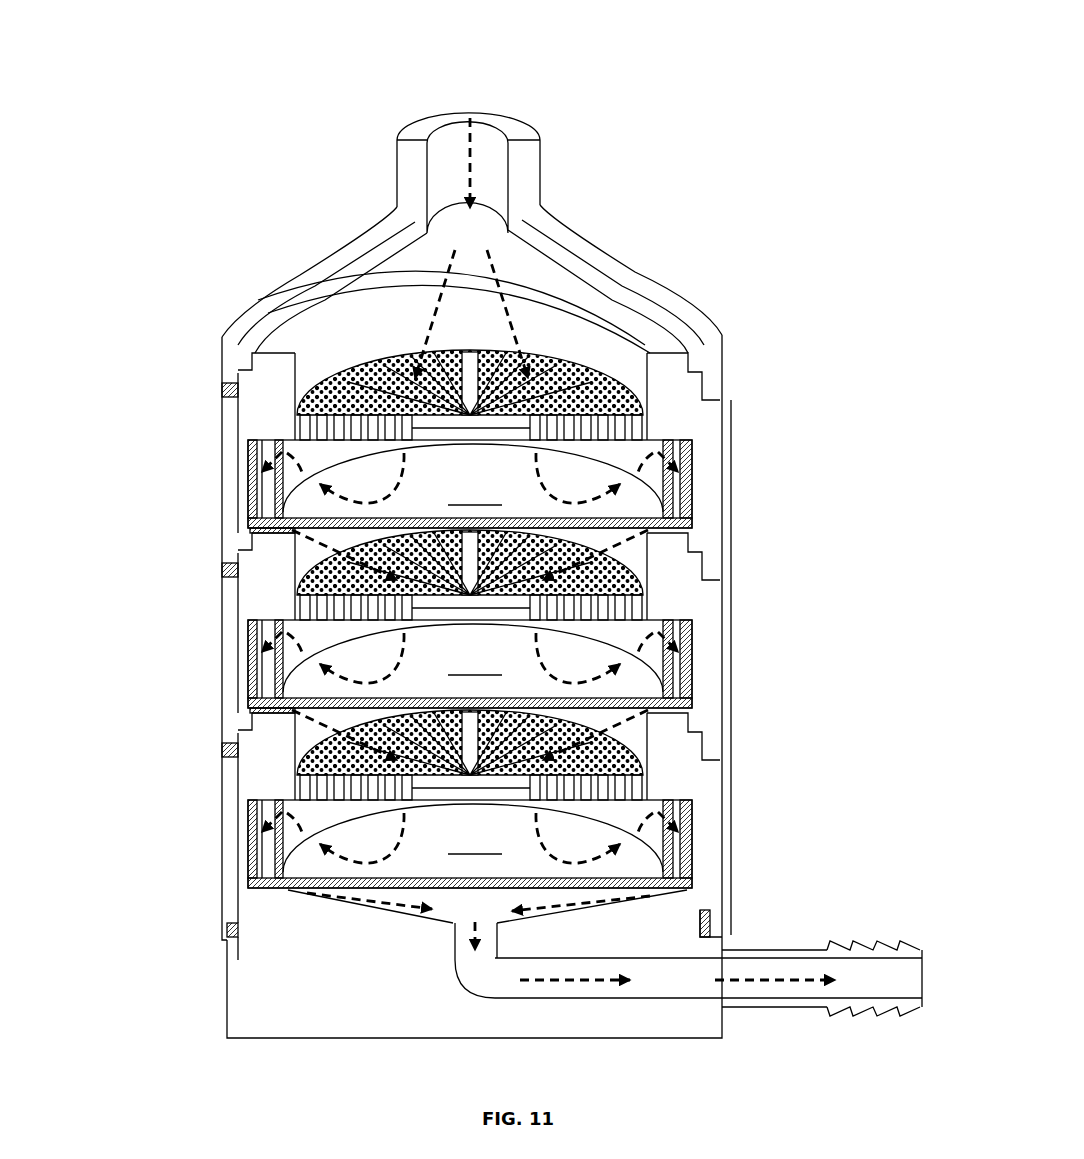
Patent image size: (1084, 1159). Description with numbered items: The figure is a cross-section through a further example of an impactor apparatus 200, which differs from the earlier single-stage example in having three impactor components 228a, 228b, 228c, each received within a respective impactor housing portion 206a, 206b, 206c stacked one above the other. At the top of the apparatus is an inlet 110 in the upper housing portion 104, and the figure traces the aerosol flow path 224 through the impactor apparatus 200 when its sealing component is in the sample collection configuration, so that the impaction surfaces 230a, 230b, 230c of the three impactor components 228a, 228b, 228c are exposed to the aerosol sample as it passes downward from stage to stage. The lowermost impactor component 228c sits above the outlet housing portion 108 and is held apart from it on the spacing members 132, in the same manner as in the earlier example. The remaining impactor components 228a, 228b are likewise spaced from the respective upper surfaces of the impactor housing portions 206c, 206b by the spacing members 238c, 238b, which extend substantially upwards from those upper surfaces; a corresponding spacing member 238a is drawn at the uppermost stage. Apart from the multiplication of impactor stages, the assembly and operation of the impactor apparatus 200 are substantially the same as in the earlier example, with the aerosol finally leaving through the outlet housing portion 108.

The impactor apparatus 200 is at (248, 208).
The inlet 110 is at (453, 99).
The housing upper portion 104 is at (603, 250).
The aerosol flow path 224 is at (415, 323).
The seal 238a is at (277, 337).
The spacing member 238b is at (280, 528).
The spacing member 238c is at (280, 707).
The impaction surface 230a is at (470, 484).
The impaction surface 230b is at (470, 664).
The impaction surface 230c is at (470, 844).
The impactor component 228a is at (265, 483).
The impactor component 228b is at (265, 675).
The impactor component 228c is at (267, 850).
The impactor housing portion 206a is at (720, 513).
The impactor housing portion 206b is at (720, 705).
The impactor housing portion 206c is at (725, 898).
The spacing members 132 is at (280, 887).
The outlet housing portion 108 is at (227, 981).